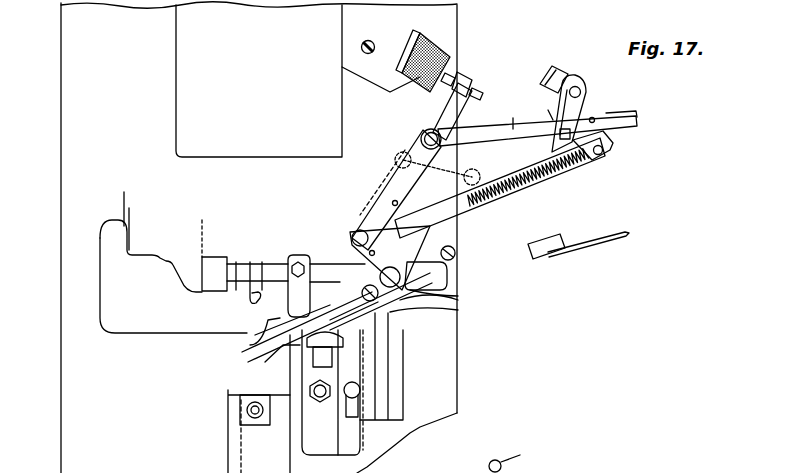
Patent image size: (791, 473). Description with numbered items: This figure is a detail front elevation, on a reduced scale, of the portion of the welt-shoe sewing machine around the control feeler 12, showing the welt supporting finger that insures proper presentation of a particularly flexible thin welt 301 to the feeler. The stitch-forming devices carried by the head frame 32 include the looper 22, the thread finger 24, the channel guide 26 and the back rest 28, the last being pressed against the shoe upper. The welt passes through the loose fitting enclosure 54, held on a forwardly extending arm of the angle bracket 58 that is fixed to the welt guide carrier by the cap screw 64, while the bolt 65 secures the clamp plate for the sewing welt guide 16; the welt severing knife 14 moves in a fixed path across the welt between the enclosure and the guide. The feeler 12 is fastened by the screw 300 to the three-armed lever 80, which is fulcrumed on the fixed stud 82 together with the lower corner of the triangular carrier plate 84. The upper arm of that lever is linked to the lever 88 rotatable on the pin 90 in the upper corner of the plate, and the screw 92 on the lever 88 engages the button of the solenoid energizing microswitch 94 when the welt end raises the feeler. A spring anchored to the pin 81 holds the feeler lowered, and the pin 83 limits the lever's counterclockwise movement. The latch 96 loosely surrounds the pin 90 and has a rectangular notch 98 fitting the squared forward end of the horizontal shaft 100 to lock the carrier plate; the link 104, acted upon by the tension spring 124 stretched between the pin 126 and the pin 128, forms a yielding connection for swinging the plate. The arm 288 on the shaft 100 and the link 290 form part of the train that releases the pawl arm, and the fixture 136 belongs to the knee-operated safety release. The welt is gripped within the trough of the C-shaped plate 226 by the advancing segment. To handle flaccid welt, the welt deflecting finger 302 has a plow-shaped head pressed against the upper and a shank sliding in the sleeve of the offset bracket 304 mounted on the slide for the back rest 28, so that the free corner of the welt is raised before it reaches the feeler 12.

The head frame 32 is at (61, 108).
The looper 22 is at (222, 256).
The thread finger 24 is at (245, 303).
The welt severing knife 14 is at (335, 262).
The solenoid energizing microswitch 94 is at (438, 46).
The screw 92 is at (464, 78).
The lever 88 is at (452, 110).
The pin 90 is at (421, 135).
The carrier plate 84 is at (412, 157).
The fixture 136 is at (395, 188).
The pin 81 is at (392, 204).
The pin 83 is at (376, 253).
The tension spring 124 is at (525, 168).
The latch 96 is at (501, 115).
The rectangular notch 98 is at (539, 108).
The link 290 is at (555, 70).
The arm 288 is at (582, 100).
The pin 128 is at (475, 212).
The link 104 is at (612, 154).
The pin 126 is at (610, 137).
The horizontal shaft 100 is at (570, 143).
The welt 301 is at (630, 232).
The C-shaped plate 226 is at (500, 258).
The screw 300 is at (388, 308).
The fixed stud 82 is at (458, 297).
The loose fitting enclosure 54 is at (458, 300).
The three-armed lever 80 is at (458, 310).
The control feeler 12 is at (387, 350).
The cap screw 64 is at (360, 386).
The bolt 65 is at (322, 398).
The angle bracket 58 is at (410, 436).
The channel guide 26 is at (250, 350).
The sewing welt guide 16 is at (265, 362).
The back rest 28 is at (265, 375).
The welt deflecting finger 302 is at (265, 380).
The offset bracket 304 is at (322, 464).